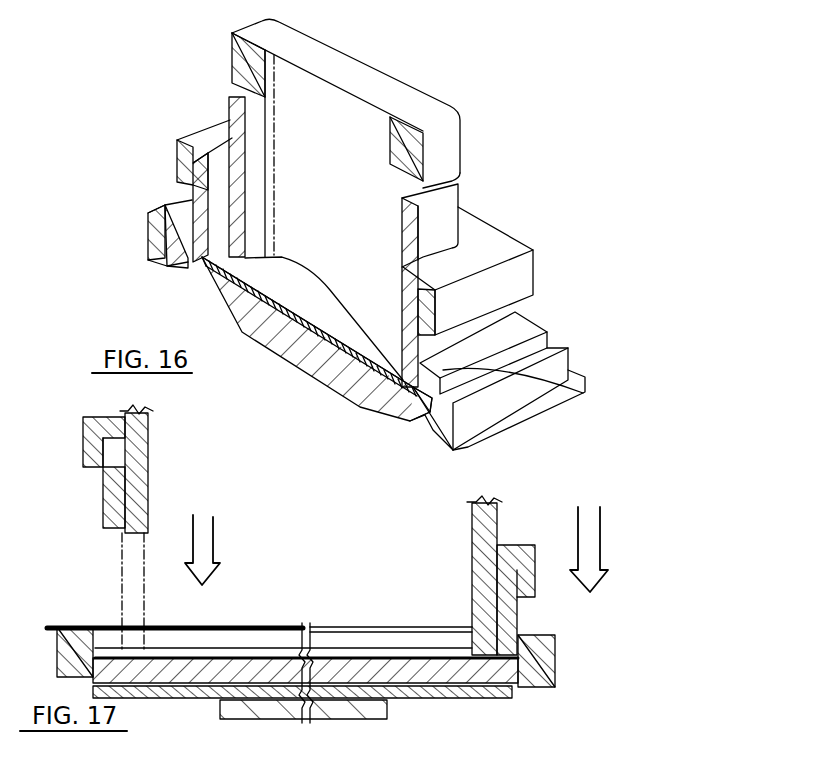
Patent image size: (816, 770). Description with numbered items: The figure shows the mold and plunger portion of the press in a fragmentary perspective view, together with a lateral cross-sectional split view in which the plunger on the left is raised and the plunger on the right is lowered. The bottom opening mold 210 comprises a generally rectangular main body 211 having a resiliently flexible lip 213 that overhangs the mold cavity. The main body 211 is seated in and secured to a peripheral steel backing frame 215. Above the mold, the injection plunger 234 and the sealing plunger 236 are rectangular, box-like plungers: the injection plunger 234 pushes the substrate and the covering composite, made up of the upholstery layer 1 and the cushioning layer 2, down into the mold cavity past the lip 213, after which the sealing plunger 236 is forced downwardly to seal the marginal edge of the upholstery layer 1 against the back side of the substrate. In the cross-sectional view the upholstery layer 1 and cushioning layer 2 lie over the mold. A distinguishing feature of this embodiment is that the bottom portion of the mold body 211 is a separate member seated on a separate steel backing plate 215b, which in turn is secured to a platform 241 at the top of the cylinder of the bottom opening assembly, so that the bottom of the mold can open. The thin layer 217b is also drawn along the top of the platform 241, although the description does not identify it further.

In FIG. 16, the injection plunger 234 is at (353, 205).
In FIG. 17, the injection plunger 234 is at (148, 477).
In FIG. 16, the sealing plunger 236 is at (478, 247).
In FIG. 17, the sealing plunger 236 is at (103, 495).
In FIG. 16, the bottom opening mold 210 is at (574, 257).
In FIG. 16, the platform 241 is at (287, 368).
In FIG. 17, the platform 241 is at (305, 670).
In FIG. 16, the thin sheet 217b is at (213, 292).
In FIG. 16, the main body 211 is at (520, 330).
In FIG. 16, the peripheral steel backing frame 215 is at (557, 367).
In FIG. 16, the resiliently flexible lip 213 is at (585, 393).
In FIG. 16, the steel backing plate 215b is at (402, 414).
In FIG. 17, the steel backing plate 215b is at (430, 700).
In FIG. 17, the upholstery layer 1 is at (65, 625).
In FIG. 17, the cushioning layer 2 is at (115, 620).